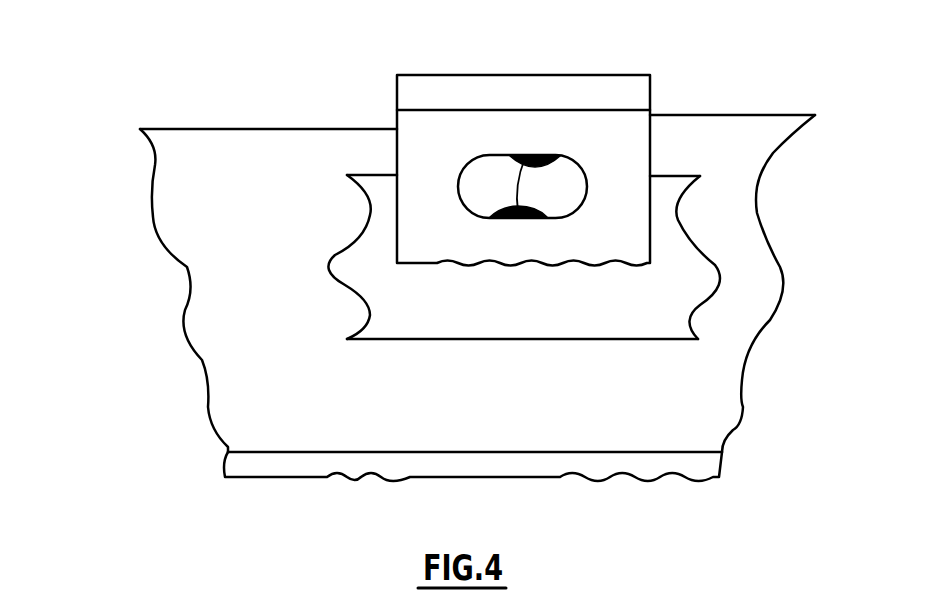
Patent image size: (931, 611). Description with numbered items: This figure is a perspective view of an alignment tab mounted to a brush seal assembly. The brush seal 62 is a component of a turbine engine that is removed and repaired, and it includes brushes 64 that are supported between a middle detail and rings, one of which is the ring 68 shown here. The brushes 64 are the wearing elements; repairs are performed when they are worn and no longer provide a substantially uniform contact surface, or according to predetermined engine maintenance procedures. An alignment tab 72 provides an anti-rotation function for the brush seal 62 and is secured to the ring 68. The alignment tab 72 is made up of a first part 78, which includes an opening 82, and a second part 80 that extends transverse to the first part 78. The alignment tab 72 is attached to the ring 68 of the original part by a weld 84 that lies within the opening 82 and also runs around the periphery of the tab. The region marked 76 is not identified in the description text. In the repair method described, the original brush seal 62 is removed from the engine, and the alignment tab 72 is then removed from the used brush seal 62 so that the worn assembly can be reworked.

The brush seal 62 is at (155, 412).
The brushes 64 is at (528, 462).
The ring 68 is at (697, 429).
The alignment tab 72 is at (407, 60).
The cavity / recess 76 is at (495, 162).
The first part 78 is at (633, 128).
The second part 80 is at (576, 88).
The opening 82 is at (558, 192).
The weld 84 is at (524, 157).